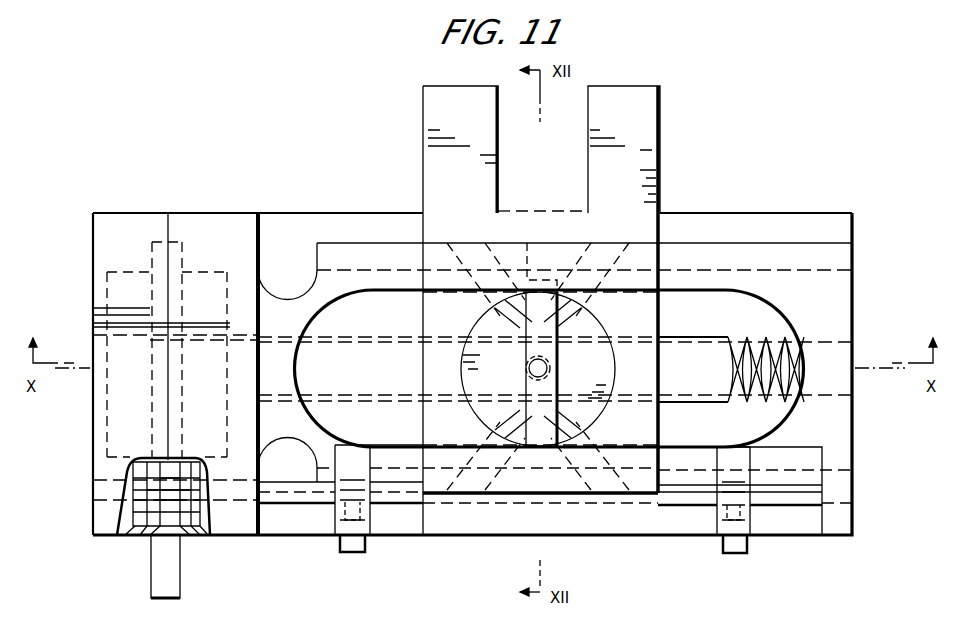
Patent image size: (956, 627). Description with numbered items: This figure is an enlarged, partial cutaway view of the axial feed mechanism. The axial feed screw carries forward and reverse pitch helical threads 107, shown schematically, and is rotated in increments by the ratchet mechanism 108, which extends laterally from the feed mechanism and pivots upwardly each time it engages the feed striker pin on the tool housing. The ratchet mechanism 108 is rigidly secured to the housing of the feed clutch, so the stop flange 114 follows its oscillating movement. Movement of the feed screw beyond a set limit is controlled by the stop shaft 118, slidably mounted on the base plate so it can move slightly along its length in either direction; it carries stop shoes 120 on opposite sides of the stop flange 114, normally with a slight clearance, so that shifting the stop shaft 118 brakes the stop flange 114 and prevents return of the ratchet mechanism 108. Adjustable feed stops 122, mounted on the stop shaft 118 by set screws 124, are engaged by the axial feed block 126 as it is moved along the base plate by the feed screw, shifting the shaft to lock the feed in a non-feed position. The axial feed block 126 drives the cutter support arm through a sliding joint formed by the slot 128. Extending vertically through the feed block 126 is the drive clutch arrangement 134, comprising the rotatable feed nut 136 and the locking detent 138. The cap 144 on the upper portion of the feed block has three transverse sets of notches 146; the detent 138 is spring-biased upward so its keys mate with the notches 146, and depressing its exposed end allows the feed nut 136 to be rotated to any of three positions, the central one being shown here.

The helical threads 107 is at (748, 340).
The ratchet mechanism 108 is at (170, 582).
The stop flange 114 is at (130, 468).
The stop shaft 118 is at (285, 493).
The stop shoes 120 is at (130, 520).
The adjustable feed stops 122 is at (343, 518).
The set screws 124 is at (364, 548).
The axial feed block 126 is at (648, 236).
The slot 128 is at (588, 177).
The drive clutch arrangement 134 is at (462, 368).
The rotatable feed nut 136 is at (474, 326).
The locking detent 138 is at (562, 380).
The cap 144 is at (637, 257).
The notches 146 is at (652, 315).